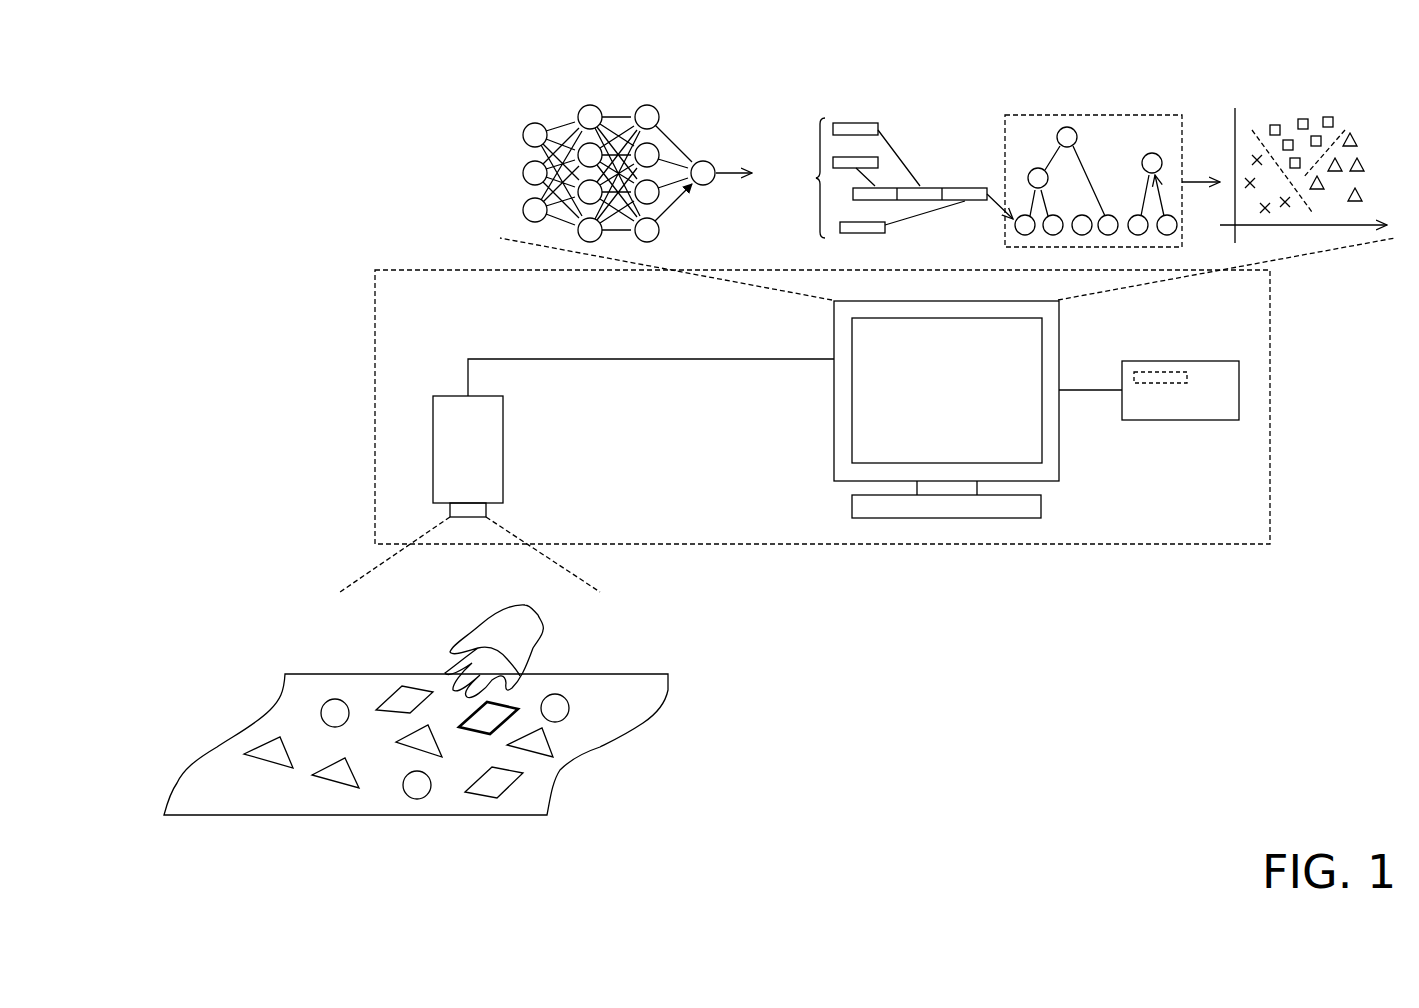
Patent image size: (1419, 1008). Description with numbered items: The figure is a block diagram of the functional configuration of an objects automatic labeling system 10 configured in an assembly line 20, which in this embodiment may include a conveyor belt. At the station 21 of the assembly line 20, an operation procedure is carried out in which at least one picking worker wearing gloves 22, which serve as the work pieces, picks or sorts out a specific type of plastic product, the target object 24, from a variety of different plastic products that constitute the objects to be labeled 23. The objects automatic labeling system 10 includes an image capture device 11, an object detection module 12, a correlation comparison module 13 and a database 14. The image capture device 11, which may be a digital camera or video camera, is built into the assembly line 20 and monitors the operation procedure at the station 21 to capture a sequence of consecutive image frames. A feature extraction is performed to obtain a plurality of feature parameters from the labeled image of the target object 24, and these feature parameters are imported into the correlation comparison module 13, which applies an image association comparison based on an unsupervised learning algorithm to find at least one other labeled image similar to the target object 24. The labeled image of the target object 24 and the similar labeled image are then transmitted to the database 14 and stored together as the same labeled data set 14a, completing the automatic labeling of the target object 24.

The objects automatic labeling system 10 is at (102, 52).
The image capture device 11 is at (433, 450).
The object detection module 12 is at (760, 97).
The correlation comparison module 13 is at (1393, 97).
The database 14 is at (1239, 390).
The labeled data set 14a is at (1165, 378).
The assembly line 20 is at (355, 818).
The station 21 is at (263, 617).
The gloves 22 is at (536, 648).
The objects to be labeled 23 is at (286, 750).
The target object 24 is at (472, 728).